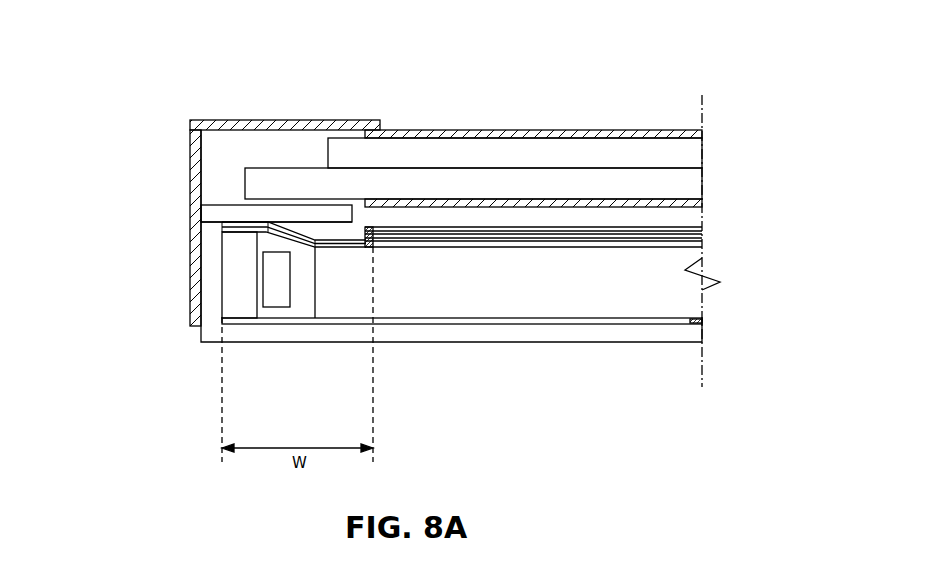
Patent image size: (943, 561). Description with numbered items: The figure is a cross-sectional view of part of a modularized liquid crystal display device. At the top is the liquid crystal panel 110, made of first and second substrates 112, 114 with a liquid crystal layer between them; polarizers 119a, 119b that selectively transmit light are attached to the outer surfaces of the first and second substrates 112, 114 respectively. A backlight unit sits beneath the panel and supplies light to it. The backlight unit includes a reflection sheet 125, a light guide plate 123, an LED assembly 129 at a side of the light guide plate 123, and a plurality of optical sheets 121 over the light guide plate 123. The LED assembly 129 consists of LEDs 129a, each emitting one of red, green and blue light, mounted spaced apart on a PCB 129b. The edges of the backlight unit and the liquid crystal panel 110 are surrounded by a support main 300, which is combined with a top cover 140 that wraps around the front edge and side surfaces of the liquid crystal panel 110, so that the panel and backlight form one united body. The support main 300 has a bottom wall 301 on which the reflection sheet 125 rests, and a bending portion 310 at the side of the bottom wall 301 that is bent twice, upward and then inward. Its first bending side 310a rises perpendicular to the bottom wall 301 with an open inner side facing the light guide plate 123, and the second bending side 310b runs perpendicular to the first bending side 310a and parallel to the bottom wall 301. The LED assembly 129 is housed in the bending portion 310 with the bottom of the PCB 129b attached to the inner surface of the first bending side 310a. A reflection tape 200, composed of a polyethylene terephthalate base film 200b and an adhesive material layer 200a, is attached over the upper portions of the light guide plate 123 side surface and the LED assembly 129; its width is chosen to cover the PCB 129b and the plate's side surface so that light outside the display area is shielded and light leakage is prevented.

The liquid crystal panel 110 is at (473, 108).
The first substrate 112 is at (511, 183).
The second substrate 114 is at (455, 157).
The polarizer 119a is at (702, 202).
The polarizer 119b is at (702, 135).
The optical sheets 121 is at (700, 230).
The light guide plate 123 is at (680, 295).
The reflection sheet 125 is at (702, 322).
The LED assembly 129 is at (279, 330).
The LEDs 129a is at (277, 293).
The PCB 129b is at (242, 292).
The top cover 140 is at (285, 120).
The reflection tape 200 is at (205, 261).
The adhesive material layer 200a is at (233, 232).
The base film 200b is at (232, 227).
The support main 300 is at (236, 223).
The bottom wall 301 is at (435, 330).
The bending portion 310 is at (182, 203).
The first bending side 310a is at (212, 225).
The second bending side 310b is at (247, 213).